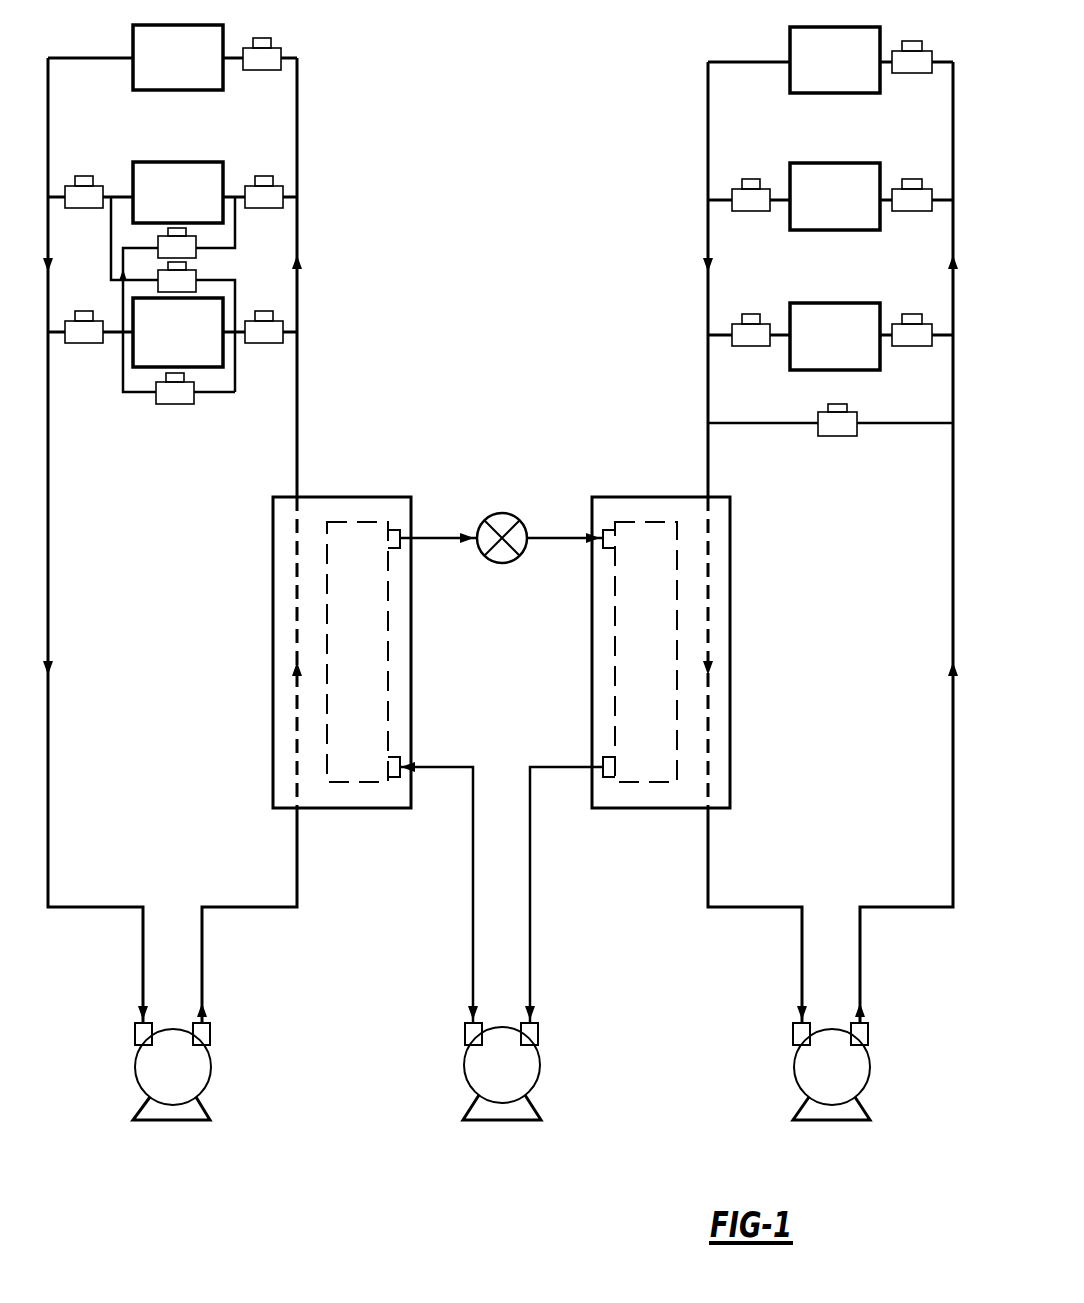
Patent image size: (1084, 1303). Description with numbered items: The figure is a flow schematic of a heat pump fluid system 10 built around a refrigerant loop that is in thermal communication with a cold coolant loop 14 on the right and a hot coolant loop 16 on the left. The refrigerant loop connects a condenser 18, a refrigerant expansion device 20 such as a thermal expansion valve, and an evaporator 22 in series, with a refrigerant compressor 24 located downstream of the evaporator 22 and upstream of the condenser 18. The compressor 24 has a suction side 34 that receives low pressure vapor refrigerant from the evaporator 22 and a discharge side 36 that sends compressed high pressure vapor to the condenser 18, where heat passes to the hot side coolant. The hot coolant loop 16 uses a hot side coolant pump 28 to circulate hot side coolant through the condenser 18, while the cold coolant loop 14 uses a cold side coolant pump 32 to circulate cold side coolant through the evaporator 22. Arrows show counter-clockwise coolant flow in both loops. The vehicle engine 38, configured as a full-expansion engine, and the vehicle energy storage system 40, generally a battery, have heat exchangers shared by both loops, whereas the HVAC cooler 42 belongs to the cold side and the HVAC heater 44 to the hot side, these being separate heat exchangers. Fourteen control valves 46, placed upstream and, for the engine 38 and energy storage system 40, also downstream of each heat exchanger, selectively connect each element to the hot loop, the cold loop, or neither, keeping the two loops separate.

The fluid system 10 is at (500, 577).
The cold coolant loop 14 is at (693, 938).
The hot coolant loop 16 is at (313, 947).
The condenser 18 is at (352, 810).
The refrigerant expansion device 20 is at (498, 556).
The evaporator 22 is at (650, 810).
The refrigerant compressor 24 is at (536, 1068).
The hot side coolant pump 28 is at (207, 1068).
The cold side coolant pump 32 is at (803, 1058).
The suction side 34 is at (530, 975).
The discharge side 36 is at (473, 978).
The vehicle engine 38 is at (165, 204).
The vehicle energy storage system 40 is at (165, 344).
The HVAC cooler 42 is at (165, 67).
The HVAC heater 44 is at (822, 70).
The control valve 46 is at (99, 188).